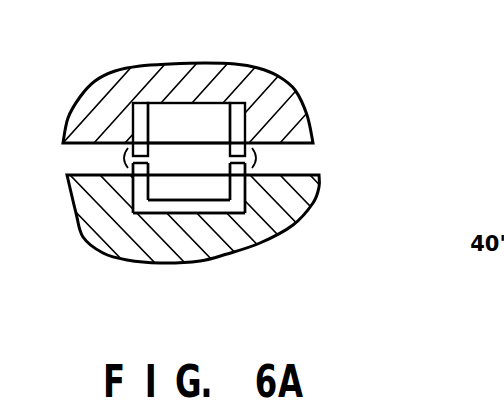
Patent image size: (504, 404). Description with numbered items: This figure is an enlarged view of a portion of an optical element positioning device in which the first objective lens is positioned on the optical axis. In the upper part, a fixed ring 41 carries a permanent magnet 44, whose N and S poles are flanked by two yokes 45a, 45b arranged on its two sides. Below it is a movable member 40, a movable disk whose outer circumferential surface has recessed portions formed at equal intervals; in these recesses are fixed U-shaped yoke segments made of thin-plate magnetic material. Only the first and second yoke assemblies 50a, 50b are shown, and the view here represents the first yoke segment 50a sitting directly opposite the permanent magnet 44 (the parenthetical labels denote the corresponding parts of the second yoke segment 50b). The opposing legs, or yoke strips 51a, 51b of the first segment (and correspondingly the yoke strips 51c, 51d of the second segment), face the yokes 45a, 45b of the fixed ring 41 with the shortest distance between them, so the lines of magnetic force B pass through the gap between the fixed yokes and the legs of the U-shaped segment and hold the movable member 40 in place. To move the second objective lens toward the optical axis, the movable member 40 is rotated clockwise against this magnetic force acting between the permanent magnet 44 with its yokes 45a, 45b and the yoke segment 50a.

The fixed ring 41 is at (103, 85).
The permanent magnet 44 is at (202, 106).
The N-pole yoke 45b is at (137, 112).
The yoke 45a is at (247, 104).
The lines of magnetic force B is at (256, 157).
The movable member 40 is at (86, 222).
The yoke strip 51b is at (138, 190).
The yoke strip 51d is at (109, 251).
The first yoke segment 50a is at (198, 210).
The second yoke segment 50b is at (189, 269).
The yoke strip 51a is at (238, 190).
The yoke strip 51c is at (270, 251).